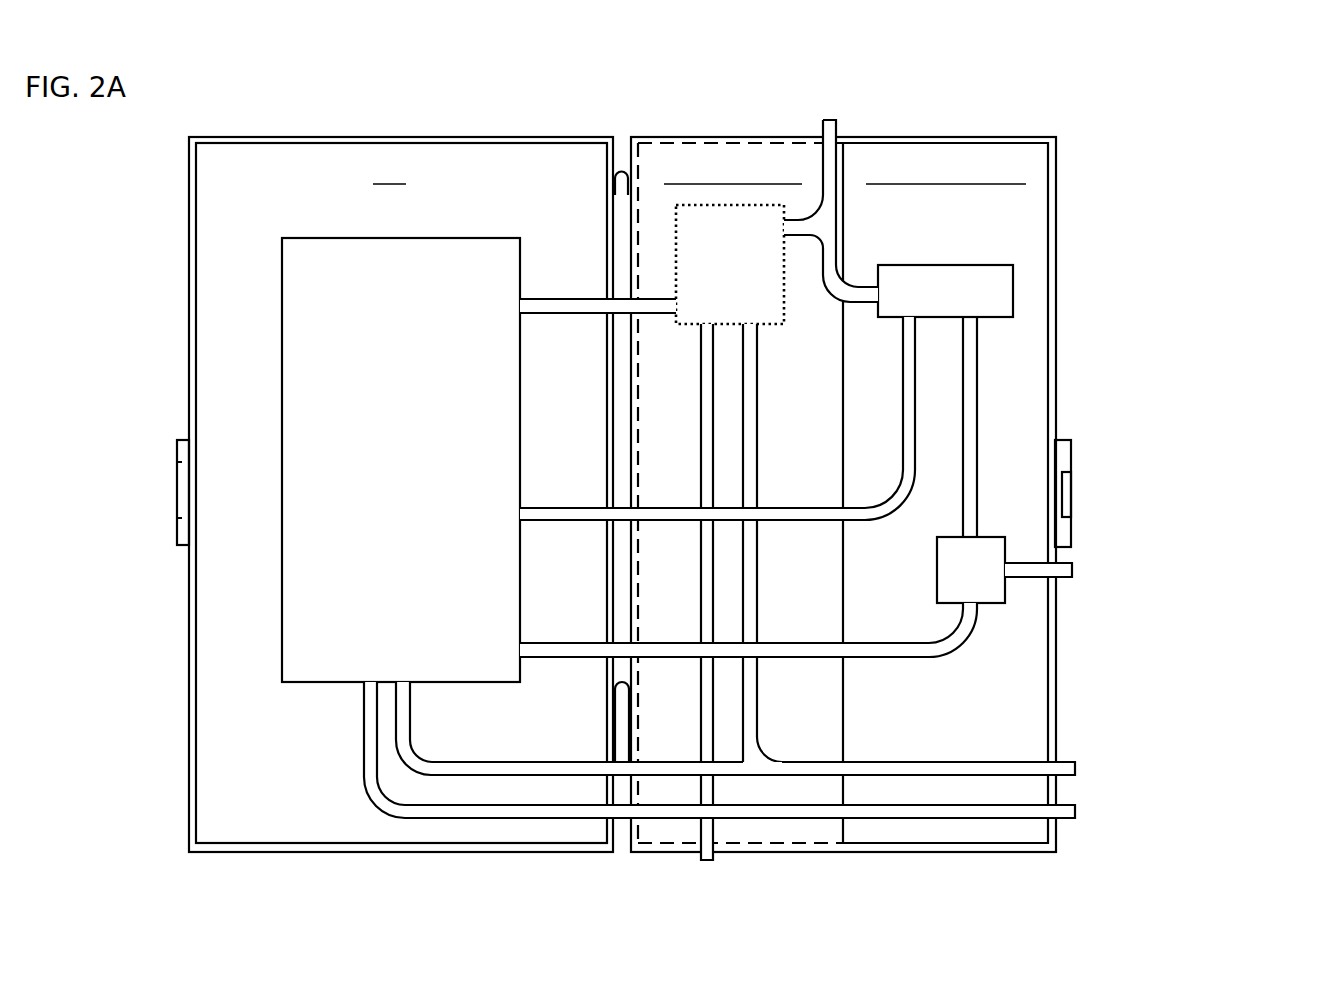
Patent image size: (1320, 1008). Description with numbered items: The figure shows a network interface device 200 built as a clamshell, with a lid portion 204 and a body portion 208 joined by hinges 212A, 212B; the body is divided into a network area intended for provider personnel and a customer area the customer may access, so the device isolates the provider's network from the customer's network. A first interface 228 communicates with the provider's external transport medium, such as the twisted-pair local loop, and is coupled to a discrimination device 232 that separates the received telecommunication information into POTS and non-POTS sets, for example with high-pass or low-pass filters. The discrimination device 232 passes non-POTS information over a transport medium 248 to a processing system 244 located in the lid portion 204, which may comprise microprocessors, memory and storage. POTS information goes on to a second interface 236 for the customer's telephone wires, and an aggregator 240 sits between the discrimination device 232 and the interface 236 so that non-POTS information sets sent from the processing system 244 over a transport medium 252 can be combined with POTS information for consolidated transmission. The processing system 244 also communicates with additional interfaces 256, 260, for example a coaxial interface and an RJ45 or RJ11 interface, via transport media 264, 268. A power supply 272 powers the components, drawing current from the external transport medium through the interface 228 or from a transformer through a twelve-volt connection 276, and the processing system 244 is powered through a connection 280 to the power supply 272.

The network interface device 200 is at (1200, 162).
The lid portion 204 is at (333, 843).
The body portion 208 is at (910, 843).
The hinge 212A is at (623, 183).
The hinge 212B is at (615, 720).
The first interface 228 is at (830, 119).
The discrimination device 232 is at (976, 267).
The second interface 236 is at (1074, 571).
The aggregator 240 is at (937, 560).
The processing system 244 is at (333, 683).
The transport medium 248 is at (783, 512).
The transport medium 252 is at (912, 652).
The additional interface 256 is at (1076, 769).
The additional interface 260 is at (1076, 812).
The transport medium 264 is at (951, 766).
The transport medium 268 is at (366, 768).
The power supply 272 is at (690, 326).
The 12V connection 276 is at (708, 856).
The connection 280 is at (570, 300).